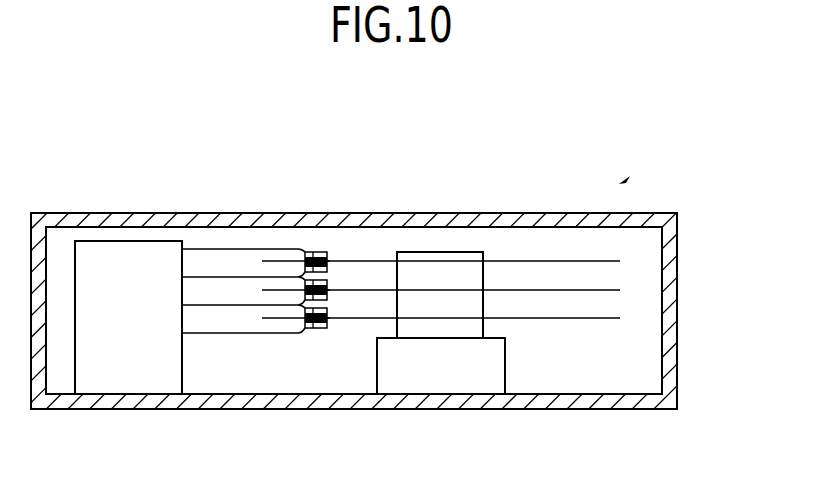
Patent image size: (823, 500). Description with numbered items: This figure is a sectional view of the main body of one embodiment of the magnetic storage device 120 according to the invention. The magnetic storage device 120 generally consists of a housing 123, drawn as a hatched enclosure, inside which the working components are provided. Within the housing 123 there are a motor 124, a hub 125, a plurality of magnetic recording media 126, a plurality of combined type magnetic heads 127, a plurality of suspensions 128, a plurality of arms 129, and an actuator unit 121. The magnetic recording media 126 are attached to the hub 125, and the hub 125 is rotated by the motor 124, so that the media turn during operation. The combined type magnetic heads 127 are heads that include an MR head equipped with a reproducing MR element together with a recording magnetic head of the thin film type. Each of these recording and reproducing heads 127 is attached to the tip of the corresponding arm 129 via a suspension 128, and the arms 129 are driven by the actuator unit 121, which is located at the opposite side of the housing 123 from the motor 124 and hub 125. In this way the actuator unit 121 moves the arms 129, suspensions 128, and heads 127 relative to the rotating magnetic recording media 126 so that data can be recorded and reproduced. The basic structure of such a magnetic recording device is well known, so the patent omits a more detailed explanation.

The magnetic storage device 120 is at (622, 182).
The actuator unit 121 is at (132, 383).
The housing 123 is at (668, 367).
The motor 124 is at (440, 383).
The hub 125 is at (440, 252).
The magnetic recording media 126 is at (562, 261).
The combined type magnetic heads 127 is at (328, 250).
The suspensions 128 is at (303, 250).
The arms 129 is at (205, 248).